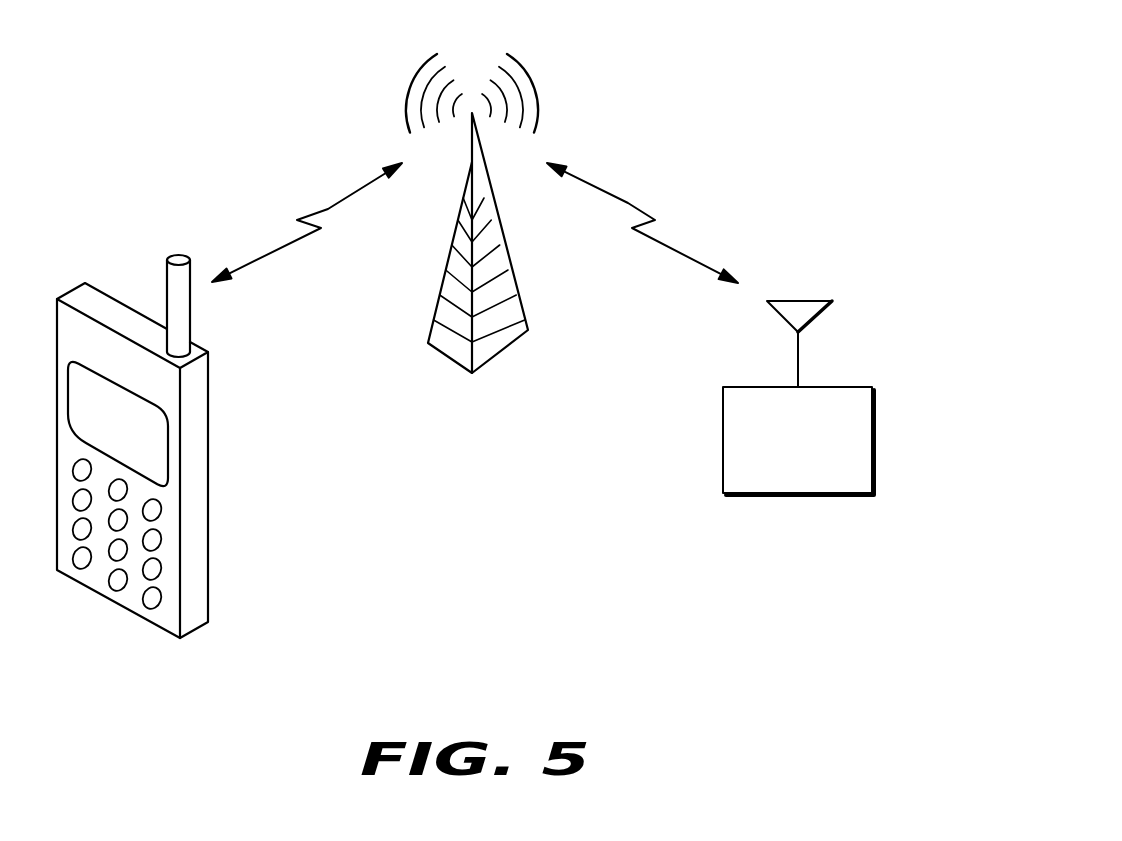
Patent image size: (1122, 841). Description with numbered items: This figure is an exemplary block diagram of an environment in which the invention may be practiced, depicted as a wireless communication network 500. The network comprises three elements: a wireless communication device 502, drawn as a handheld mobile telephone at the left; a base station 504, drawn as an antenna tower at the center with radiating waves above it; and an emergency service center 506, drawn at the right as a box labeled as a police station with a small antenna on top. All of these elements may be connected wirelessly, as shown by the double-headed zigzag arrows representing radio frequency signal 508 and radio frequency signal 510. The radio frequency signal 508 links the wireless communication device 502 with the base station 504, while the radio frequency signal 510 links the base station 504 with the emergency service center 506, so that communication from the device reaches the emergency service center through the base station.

The wireless communication network 500 is at (808, 59).
The wireless communication device 502 is at (208, 475).
The base station 504 is at (450, 358).
The emergency service center 506 is at (855, 387).
The radio frequency signal 508 is at (323, 203).
The radio frequency signal 510 is at (628, 203).